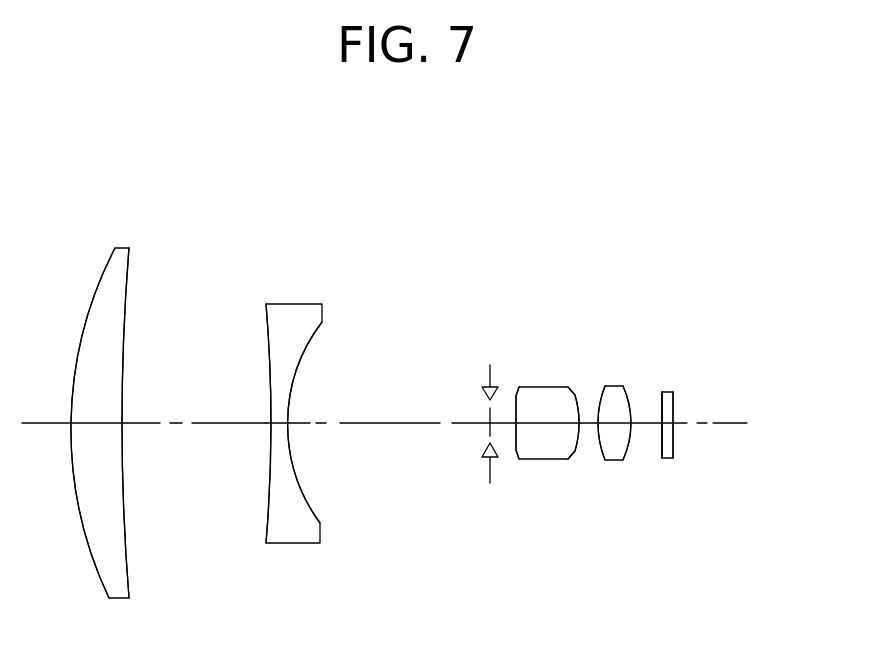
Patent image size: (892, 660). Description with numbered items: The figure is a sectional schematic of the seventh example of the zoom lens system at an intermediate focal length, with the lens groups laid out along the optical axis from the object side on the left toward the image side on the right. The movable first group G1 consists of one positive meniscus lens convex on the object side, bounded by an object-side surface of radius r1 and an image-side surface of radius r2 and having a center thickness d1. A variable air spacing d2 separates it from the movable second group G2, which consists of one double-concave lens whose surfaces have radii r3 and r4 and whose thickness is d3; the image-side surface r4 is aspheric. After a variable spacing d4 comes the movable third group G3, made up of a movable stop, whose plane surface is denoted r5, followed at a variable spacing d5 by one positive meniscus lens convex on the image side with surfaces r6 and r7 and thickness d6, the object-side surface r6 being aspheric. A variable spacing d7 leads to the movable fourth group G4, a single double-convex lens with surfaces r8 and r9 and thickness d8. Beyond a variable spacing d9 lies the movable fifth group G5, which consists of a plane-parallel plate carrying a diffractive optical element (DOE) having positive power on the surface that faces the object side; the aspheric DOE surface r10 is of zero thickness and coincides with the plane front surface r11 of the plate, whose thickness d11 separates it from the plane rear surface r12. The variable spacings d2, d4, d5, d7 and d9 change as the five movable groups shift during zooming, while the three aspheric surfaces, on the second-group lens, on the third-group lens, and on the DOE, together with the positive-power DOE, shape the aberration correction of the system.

The first group G1 is at (145, 177).
The second group G2 is at (332, 177).
The third group G3 is at (574, 172).
The fourth group G4 is at (639, 172).
The fifth group G5 is at (689, 172).
The radius of curvature of first lens surface r1 is at (99, 283).
The radius of curvature of second lens surface r2 is at (128, 285).
The radius of curvature of third lens surface r3 is at (266, 323).
The radius of curvature of fourth lens surface r4 is at (317, 341).
The stop surface r5 is at (488, 408).
The radius of curvature of sixth lens surface r6 is at (515, 403).
The radius of curvature of seventh lens surface r7 is at (578, 398).
The radius of curvature of eighth lens surface r8 is at (598, 400).
The radius of curvature of ninth lens surface r9 is at (628, 401).
The radius of curvature of tenth surface r10 is at (662, 397).
The radius of curvature of eleventh surface r11 is at (744, 350).
The radius of curvature of twelfth surface r12 is at (674, 400).
The spacing between first and second surfaces d1 is at (96, 445).
The spacing between second and third surfaces d2 is at (194, 445).
The spacing between third and fourth surfaces d3 is at (282, 426).
The spacing between fourth and fifth surfaces d4 is at (389, 445).
The spacing between fifth and sixth surfaces d5 is at (503, 427).
The spacing between sixth and seventh surfaces d6 is at (550, 423).
The spacing between seventh and eighth surfaces d7 is at (587, 423).
The spacing between eighth and ninth surfaces d8 is at (612, 423).
The spacing between ninth and tenth surfaces d9 is at (645, 423).
The spacing between eleventh and twelfth surfaces d11 is at (666, 423).